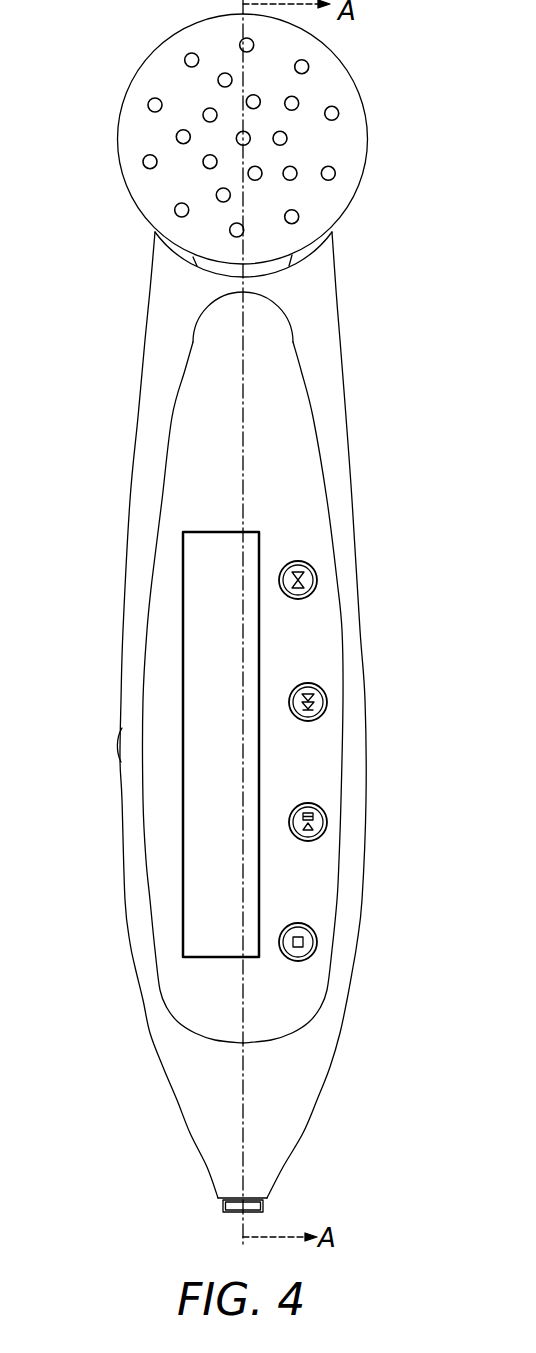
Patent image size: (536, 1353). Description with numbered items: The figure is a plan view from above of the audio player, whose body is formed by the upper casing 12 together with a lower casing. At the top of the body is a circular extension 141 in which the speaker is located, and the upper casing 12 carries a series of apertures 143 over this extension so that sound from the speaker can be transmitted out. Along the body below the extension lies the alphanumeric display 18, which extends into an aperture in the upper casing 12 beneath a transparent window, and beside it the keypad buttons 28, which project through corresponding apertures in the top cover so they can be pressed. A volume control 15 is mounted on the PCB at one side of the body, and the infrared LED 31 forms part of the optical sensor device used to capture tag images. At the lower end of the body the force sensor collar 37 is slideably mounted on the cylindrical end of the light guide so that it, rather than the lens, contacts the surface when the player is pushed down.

The upper casing 12 is at (342, 327).
The volume control 15 is at (119, 752).
The alphanumeric display 18 is at (240, 782).
The keypad buttons 28 is at (315, 578).
The infrared LED 31 is at (322, 647).
The force sensor collar 37 is at (222, 1203).
The circular extension 141 is at (118, 113).
The apertures 143 is at (339, 112).